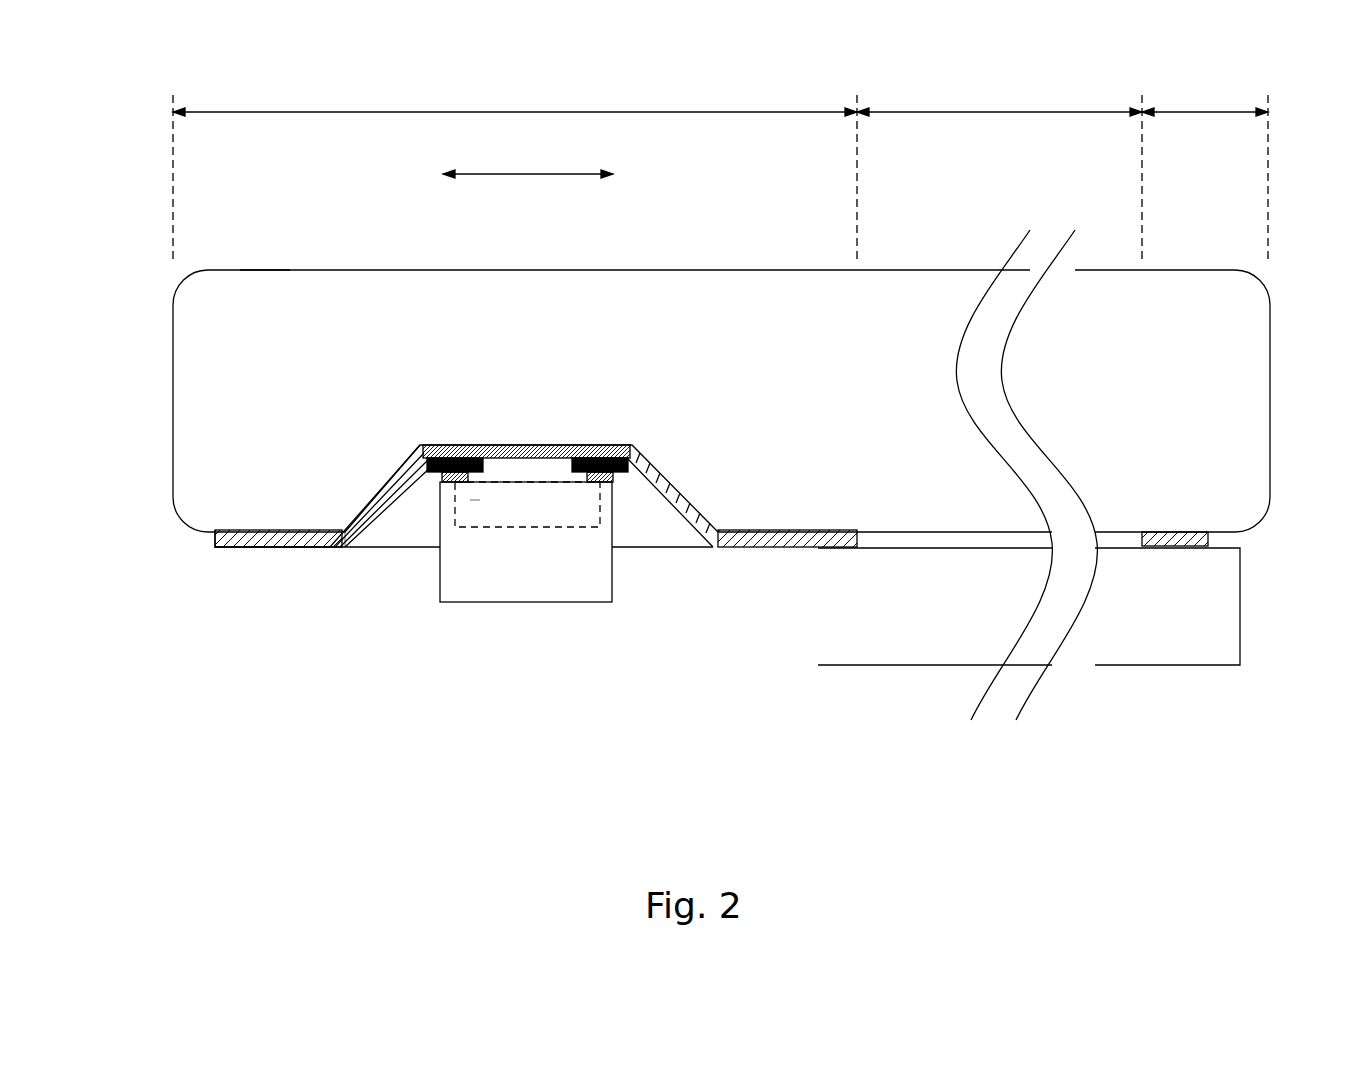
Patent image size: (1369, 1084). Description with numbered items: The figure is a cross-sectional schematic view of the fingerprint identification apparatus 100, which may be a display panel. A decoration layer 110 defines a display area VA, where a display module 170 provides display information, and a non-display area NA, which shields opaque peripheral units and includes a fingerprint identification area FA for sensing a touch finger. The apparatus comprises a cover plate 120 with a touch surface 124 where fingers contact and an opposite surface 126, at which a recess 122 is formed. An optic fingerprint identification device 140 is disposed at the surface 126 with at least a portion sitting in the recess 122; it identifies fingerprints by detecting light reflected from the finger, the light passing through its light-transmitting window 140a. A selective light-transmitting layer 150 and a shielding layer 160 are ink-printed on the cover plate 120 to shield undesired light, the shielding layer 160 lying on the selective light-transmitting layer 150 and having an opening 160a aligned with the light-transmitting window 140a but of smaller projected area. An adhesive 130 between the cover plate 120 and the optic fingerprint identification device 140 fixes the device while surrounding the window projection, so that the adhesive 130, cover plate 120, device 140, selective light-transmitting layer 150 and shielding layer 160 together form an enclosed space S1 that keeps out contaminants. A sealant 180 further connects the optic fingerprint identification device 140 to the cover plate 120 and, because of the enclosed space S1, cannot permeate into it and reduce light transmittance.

The fingerprint identification apparatus 100 is at (101, 99).
The decoration layer 110 is at (283, 548).
The cover plate 120 is at (205, 373).
The recess 122 is at (360, 487).
The touch surface 124 is at (258, 270).
The surface 126 is at (222, 548).
The adhesive 130 is at (445, 483).
The optic fingerprint identification device 140 is at (530, 583).
The light-transmitting window 140a is at (557, 515).
The selective light-transmitting layer 150 is at (505, 445).
The shielding layer 160 is at (625, 448).
The opening 160a is at (581, 452).
The display module 170 is at (1213, 613).
The sealant 180 is at (388, 528).
The enclosed space S1 is at (489, 494).
The non-display area NA is at (720, 172).
The display area VA is at (999, 172).
The fingerprint identification area FA is at (528, 162).